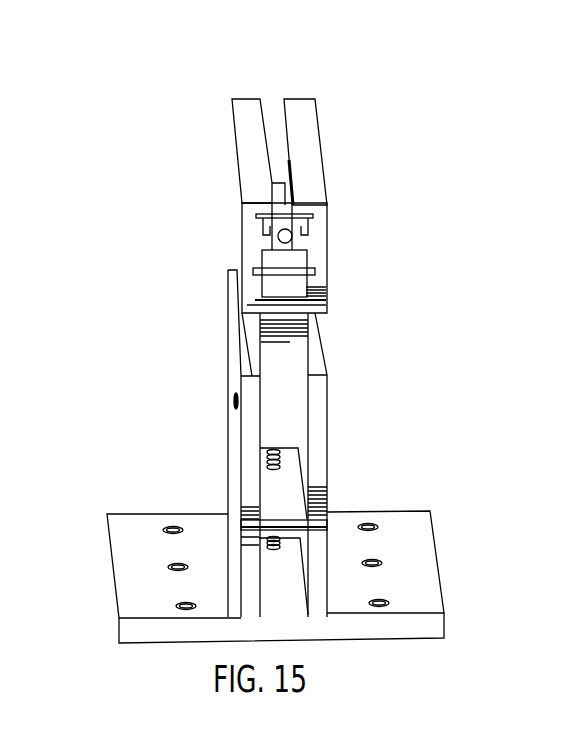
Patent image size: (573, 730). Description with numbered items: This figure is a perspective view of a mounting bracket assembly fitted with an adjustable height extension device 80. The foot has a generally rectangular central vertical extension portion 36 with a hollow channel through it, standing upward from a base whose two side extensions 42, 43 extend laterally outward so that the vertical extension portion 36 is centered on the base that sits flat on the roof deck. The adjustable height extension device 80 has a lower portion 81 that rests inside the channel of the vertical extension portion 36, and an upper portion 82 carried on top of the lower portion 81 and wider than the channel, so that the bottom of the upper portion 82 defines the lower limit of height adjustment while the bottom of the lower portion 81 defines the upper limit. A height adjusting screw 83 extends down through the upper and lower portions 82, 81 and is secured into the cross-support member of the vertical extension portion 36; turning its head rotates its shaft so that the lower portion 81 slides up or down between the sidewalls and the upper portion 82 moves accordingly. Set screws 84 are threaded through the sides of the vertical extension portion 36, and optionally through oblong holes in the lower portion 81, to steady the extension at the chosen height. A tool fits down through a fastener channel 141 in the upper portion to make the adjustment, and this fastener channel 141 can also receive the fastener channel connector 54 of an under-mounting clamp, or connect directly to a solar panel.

The fastener channel 141 is at (282, 82).
The adjustable height extension device 80 is at (186, 152).
The upper portion 82 is at (323, 147).
The set screws 84 is at (228, 335).
The lower portion 81 is at (317, 330).
The vertical extension portion 36 is at (206, 447).
The height adjusting screw 83 is at (322, 460).
The side extension 42 is at (110, 514).
The side extension 43 is at (427, 520).
The fastener channel connector 54 is at (437, 570).